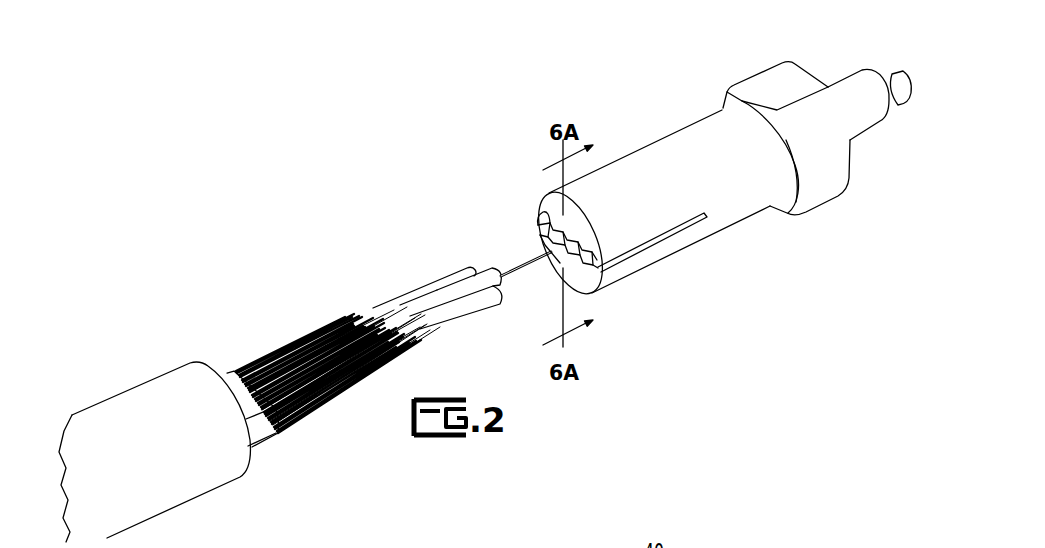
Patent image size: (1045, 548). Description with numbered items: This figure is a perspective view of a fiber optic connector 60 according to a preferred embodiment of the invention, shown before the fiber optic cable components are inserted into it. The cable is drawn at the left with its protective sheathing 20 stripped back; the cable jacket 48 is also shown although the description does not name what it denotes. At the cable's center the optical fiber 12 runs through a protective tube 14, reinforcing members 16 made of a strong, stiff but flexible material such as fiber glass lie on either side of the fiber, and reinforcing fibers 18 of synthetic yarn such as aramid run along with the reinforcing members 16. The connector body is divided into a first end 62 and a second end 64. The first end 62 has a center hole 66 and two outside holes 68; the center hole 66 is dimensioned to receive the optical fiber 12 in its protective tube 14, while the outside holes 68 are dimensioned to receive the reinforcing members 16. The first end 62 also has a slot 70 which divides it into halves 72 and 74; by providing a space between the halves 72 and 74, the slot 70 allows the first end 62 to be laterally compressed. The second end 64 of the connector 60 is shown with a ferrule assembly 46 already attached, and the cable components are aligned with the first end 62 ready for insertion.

The optical fiber 12 is at (514, 270).
The protective tube 14 is at (442, 298).
The reinforcing members 16 is at (417, 300).
The reinforcing fibers 18 is at (332, 397).
The protective sheathing 20 is at (262, 428).
The ferrule assembly 46 is at (850, 83).
The cable jacket 48 is at (203, 467).
The fiber optic connector 60 is at (653, 78).
The first end 62 is at (623, 268).
The second end 64 is at (797, 193).
The center hole 66 is at (560, 263).
The outside holes 68 is at (540, 234).
The slot 70 is at (680, 228).
The half 72 is at (584, 284).
The half 74 is at (543, 213).